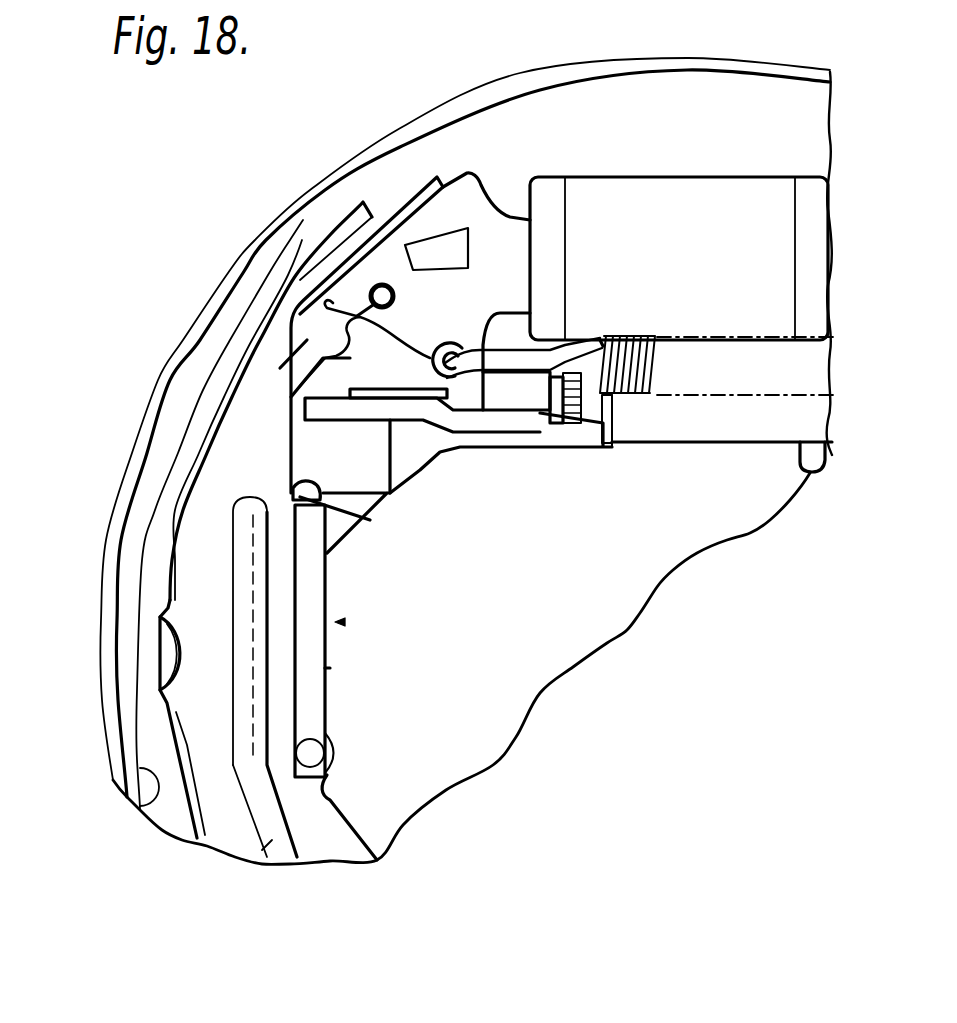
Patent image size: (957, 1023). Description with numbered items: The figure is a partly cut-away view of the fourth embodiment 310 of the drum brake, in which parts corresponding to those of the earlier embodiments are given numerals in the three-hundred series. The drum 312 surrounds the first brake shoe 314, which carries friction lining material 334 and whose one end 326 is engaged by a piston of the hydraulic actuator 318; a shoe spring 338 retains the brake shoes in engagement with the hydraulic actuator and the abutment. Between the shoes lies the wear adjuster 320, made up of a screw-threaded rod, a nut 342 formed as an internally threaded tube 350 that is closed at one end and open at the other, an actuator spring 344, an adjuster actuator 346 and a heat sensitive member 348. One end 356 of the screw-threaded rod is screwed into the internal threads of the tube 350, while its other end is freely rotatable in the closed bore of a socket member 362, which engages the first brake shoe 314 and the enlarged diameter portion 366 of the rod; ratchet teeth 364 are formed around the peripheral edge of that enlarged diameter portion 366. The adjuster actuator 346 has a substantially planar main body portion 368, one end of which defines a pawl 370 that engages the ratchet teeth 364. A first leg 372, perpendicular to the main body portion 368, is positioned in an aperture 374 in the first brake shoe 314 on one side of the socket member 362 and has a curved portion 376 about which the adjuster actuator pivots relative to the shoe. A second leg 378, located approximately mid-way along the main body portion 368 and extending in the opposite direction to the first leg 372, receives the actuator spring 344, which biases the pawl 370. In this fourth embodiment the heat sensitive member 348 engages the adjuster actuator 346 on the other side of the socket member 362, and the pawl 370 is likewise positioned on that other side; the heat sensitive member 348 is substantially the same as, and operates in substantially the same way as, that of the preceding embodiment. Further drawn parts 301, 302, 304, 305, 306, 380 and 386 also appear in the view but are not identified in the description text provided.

The cable 301 is at (290, 500).
The pin 302 is at (375, 513).
The lever 304 is at (320, 590).
The strut 305 is at (353, 533).
The pivot 306 is at (293, 470).
The fourth embodiment 310 is at (288, 185).
The drum 312 is at (688, 60).
The first brake shoe 314 is at (317, 813).
The hydraulic actuator 318 is at (708, 193).
The wear adjuster 320 is at (611, 452).
The one end of first brake shoe 326 is at (478, 190).
The friction lining material 334 is at (147, 697).
The shoe spring 338 is at (273, 843).
The nut 342 is at (714, 455).
The actuator spring 344 is at (654, 338).
The adjuster actuator 346 is at (313, 377).
The heat sensitive member 348 is at (307, 668).
The tube 350 is at (818, 473).
The one end of screw-threaded rod 356 is at (610, 417).
The socket member 362 is at (498, 400).
The ratchet teeth 364 is at (594, 337).
The enlarged diameter portion 366 is at (598, 411).
The main body portion 368 is at (523, 437).
The pawl 370 is at (568, 443).
The first leg 372 is at (340, 323).
The aperture 374 is at (376, 286).
The curved portion 376 is at (396, 298).
The second leg 378 is at (450, 355).
The direction of movement 380 is at (340, 622).
The roller 386 is at (320, 757).